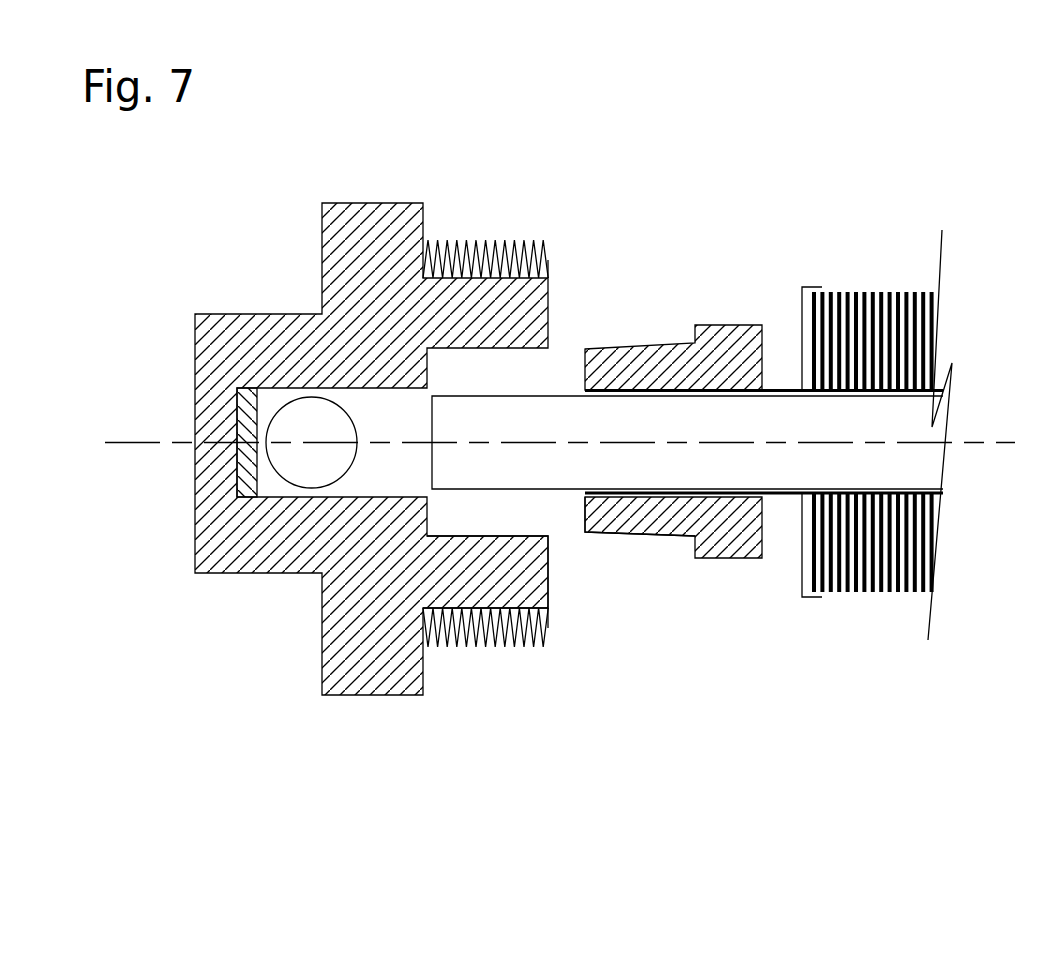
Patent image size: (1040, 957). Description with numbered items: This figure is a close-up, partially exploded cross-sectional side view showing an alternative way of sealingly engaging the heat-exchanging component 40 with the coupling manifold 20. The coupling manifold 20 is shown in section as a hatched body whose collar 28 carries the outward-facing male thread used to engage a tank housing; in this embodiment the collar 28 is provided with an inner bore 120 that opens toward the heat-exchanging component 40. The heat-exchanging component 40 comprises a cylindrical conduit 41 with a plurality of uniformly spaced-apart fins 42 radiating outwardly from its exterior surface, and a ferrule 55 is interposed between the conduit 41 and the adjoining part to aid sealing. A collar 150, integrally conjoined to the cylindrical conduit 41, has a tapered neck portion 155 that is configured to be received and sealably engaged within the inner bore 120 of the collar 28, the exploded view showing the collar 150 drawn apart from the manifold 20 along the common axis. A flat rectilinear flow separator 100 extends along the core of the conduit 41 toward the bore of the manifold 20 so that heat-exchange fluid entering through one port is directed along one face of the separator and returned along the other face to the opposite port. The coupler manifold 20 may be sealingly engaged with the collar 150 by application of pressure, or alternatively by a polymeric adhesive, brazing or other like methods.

The coupling manifold 20 is at (367, 160).
The collar 28 is at (484, 205).
The heat-exchanging component 40 is at (797, 398).
The cylindrical conduit 41 is at (777, 380).
The fins 42 is at (882, 292).
The ferrule 55 is at (807, 598).
The flow separator 100 is at (573, 490).
The inner bore 120 is at (485, 537).
The collar 150 is at (703, 560).
The tapered neck portion 155 is at (600, 535).